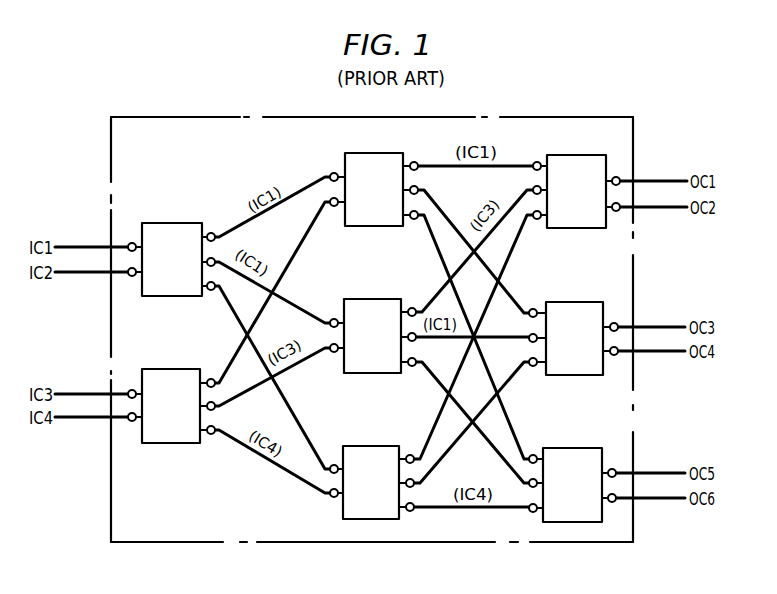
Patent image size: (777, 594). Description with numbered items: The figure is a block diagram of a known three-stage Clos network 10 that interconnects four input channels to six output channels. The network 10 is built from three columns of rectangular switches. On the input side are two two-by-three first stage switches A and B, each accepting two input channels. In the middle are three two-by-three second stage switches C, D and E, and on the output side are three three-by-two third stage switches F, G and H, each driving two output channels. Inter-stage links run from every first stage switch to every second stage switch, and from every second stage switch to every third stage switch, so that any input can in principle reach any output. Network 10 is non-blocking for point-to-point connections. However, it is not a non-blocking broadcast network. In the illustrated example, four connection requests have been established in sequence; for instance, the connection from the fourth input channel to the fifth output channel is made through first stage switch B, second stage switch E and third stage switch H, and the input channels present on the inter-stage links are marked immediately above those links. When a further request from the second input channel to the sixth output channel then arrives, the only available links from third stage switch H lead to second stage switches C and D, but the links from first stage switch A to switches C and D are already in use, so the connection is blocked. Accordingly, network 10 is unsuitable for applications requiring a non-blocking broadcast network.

The three-stage Clos network 10 is at (584, 118).
The first stage switch A is at (170, 223).
The first stage switch B is at (170, 369).
The second stage switch C is at (370, 153).
The second stage switch D is at (368, 299).
The second stage switch E is at (365, 446).
The third stage switch F is at (576, 155).
The third stage switch G is at (575, 302).
The third stage switch H is at (568, 448).